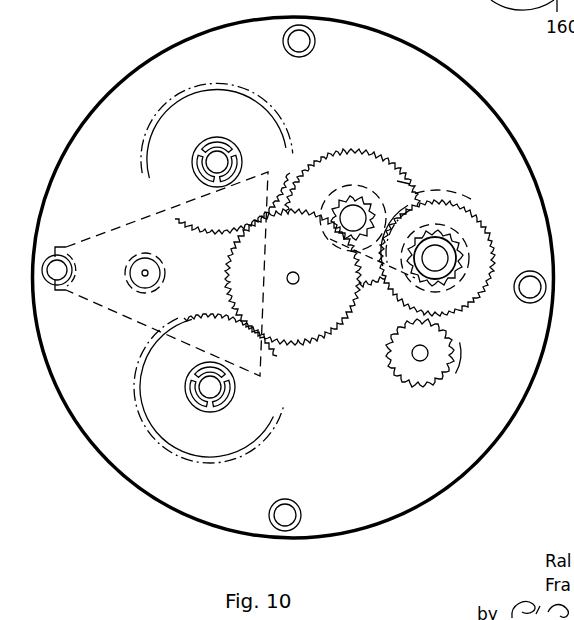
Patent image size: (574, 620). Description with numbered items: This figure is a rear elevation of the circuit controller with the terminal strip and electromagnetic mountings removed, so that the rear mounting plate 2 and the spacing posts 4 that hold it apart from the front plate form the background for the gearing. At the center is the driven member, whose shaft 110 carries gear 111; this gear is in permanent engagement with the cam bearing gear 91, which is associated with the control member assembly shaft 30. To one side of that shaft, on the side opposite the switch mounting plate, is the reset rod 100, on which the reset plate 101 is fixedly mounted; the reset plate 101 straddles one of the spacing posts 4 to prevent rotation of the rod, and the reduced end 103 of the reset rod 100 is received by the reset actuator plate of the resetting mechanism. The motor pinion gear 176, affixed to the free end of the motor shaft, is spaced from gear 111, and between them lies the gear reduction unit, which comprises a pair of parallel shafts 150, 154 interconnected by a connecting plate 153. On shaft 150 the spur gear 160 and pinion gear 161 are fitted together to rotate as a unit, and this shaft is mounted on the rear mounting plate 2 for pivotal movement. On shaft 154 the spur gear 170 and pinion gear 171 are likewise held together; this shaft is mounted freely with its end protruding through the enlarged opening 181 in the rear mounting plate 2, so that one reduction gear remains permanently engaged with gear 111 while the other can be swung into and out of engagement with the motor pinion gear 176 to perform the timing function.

The rear mounting plate 2 is at (192, 503).
The spacing posts 4 is at (48, 270).
The control member assembly shaft 30 is at (207, 162).
The cam bearing gear 91 is at (278, 117).
The reset rod 100 is at (162, 264).
The reset plate 101 is at (95, 308).
The reduced end of reset rod 103 is at (148, 276).
The driven member shaft 110 is at (298, 281).
The driven member gear 111 is at (308, 323).
The reduction unit shaft 150 is at (362, 214).
The connecting plate 153 is at (452, 190).
The reduction unit shaft 154 is at (440, 254).
The spur gear 160 is at (342, 148).
The pinion gear 161 is at (340, 200).
The spur gear 170 is at (490, 252).
The pinion gear 171 is at (447, 265).
The motor pinion gear 176 is at (425, 368).
The enlarged opening 181 is at (450, 277).